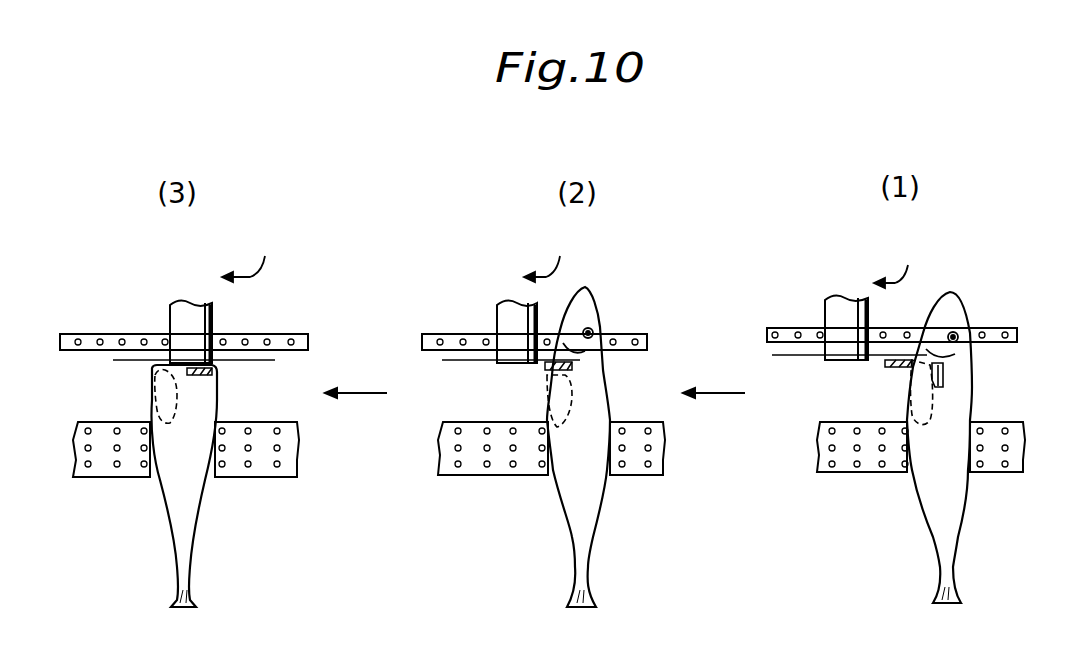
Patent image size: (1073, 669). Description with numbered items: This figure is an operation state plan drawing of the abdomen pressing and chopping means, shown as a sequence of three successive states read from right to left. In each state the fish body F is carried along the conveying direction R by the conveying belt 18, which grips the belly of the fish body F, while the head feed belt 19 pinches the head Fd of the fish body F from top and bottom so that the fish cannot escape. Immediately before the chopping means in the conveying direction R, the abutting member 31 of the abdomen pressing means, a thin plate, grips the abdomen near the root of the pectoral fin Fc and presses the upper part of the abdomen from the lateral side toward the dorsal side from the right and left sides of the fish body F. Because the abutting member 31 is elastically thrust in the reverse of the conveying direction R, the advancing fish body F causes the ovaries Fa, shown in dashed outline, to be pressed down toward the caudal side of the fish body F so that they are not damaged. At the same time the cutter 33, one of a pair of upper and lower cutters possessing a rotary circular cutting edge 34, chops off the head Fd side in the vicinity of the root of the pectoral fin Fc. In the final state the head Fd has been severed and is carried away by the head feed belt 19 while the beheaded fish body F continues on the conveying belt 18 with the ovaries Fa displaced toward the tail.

The conveying belt 18 is at (104, 478).
The head feed belt 19 is at (88, 337).
The abutting member 31 is at (545, 368).
The cutter 33 is at (178, 301).
The rotary circular cutting edge 34 is at (134, 358).
The fish body F is at (201, 497).
The ovaries Fa is at (155, 390).
The pectoral fin Fc is at (946, 373).
The head Fd is at (591, 313).
The conveying direction R is at (574, 255).